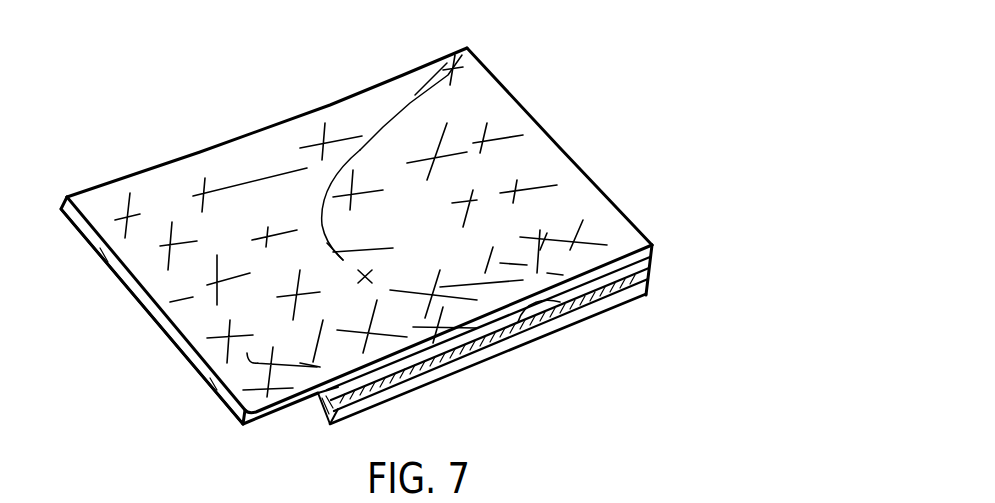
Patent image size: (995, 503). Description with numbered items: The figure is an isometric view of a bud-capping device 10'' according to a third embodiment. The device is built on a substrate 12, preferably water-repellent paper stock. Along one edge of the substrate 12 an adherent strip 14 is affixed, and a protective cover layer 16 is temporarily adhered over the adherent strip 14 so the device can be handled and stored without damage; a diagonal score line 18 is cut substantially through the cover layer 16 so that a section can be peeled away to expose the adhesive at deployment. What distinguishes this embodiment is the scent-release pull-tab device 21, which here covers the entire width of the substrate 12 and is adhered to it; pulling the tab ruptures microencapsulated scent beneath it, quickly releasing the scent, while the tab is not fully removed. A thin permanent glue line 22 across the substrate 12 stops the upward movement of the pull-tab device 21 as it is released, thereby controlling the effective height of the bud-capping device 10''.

The bud-capping device 10'' is at (356, 212).
The substrate 12 is at (648, 268).
The adherent strip 14 is at (553, 320).
The protective cover layer 16 is at (462, 369).
The diagonal score line 18 is at (339, 83).
The scent-release pull-tab device 21 is at (240, 384).
The permanent glue line 22 is at (567, 337).